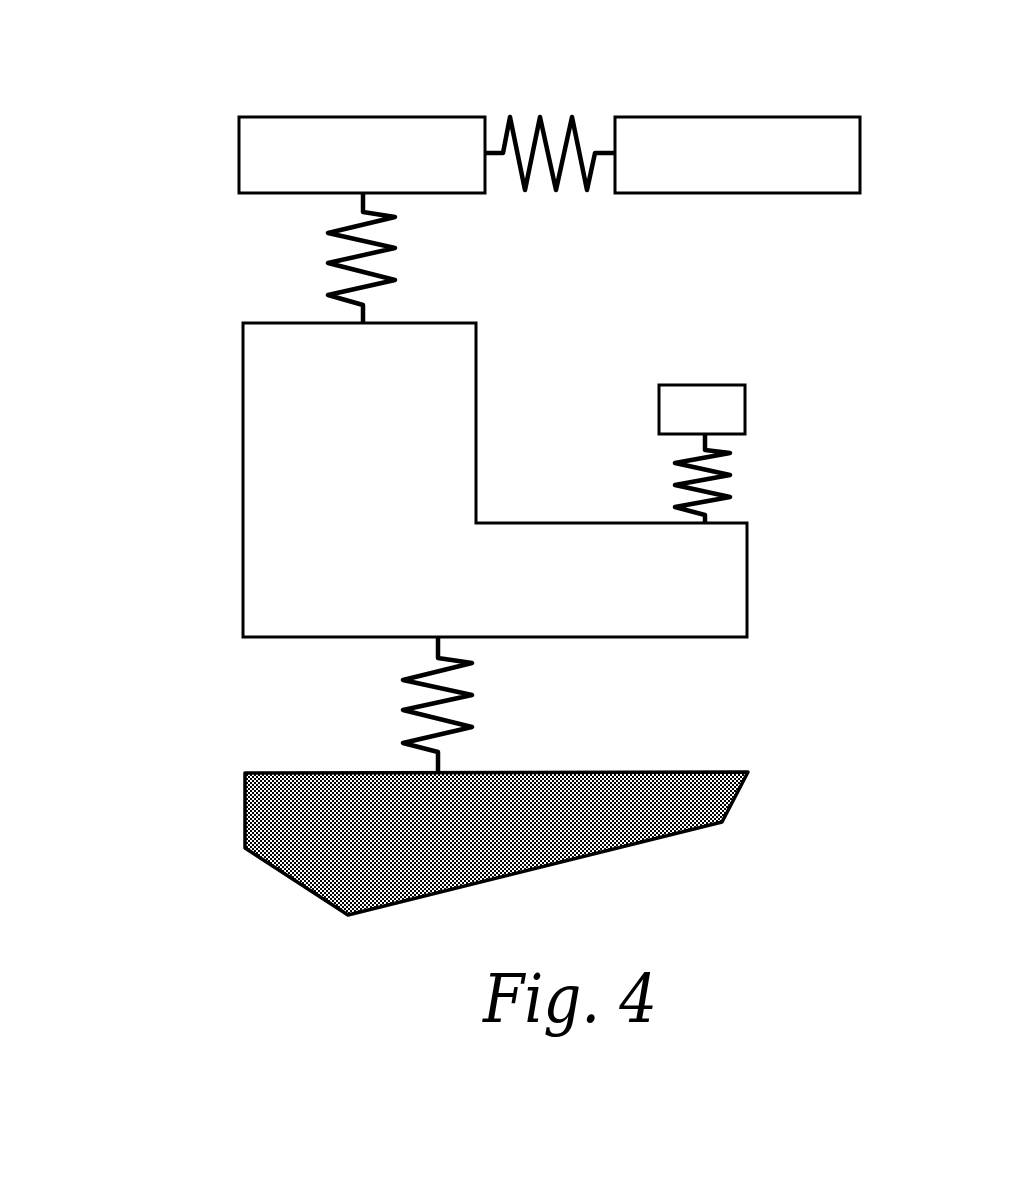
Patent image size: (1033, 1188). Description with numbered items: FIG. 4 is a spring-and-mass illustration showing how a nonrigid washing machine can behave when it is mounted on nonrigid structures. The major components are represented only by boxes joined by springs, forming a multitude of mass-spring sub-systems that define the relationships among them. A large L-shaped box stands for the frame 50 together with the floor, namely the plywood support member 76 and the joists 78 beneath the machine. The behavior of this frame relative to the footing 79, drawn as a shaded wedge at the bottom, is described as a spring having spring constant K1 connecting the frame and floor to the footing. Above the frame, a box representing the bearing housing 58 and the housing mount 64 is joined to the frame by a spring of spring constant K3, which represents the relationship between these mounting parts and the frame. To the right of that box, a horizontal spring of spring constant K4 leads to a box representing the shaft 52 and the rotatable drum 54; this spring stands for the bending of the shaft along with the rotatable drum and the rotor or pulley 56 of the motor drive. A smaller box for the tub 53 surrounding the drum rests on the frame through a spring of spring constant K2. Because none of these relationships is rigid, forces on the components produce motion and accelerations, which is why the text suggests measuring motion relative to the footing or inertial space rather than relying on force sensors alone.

The frame 50 is at (390, 480).
The shaft 52 is at (737, 105).
The tub 53 is at (710, 385).
The rotatable drum 54 is at (727, 117).
The rotor or pulley 56 is at (344, 105).
The bearing housing 58 is at (344, 105).
The housing mount 64 is at (348, 117).
The plywood support member 76 is at (390, 480).
The joists 78 is at (243, 455).
The footing 79 is at (262, 773).
The spring constant K1 is at (472, 695).
The spring constant K2 is at (730, 473).
The spring constant K3 is at (395, 248).
The spring constant K4 is at (541, 117).